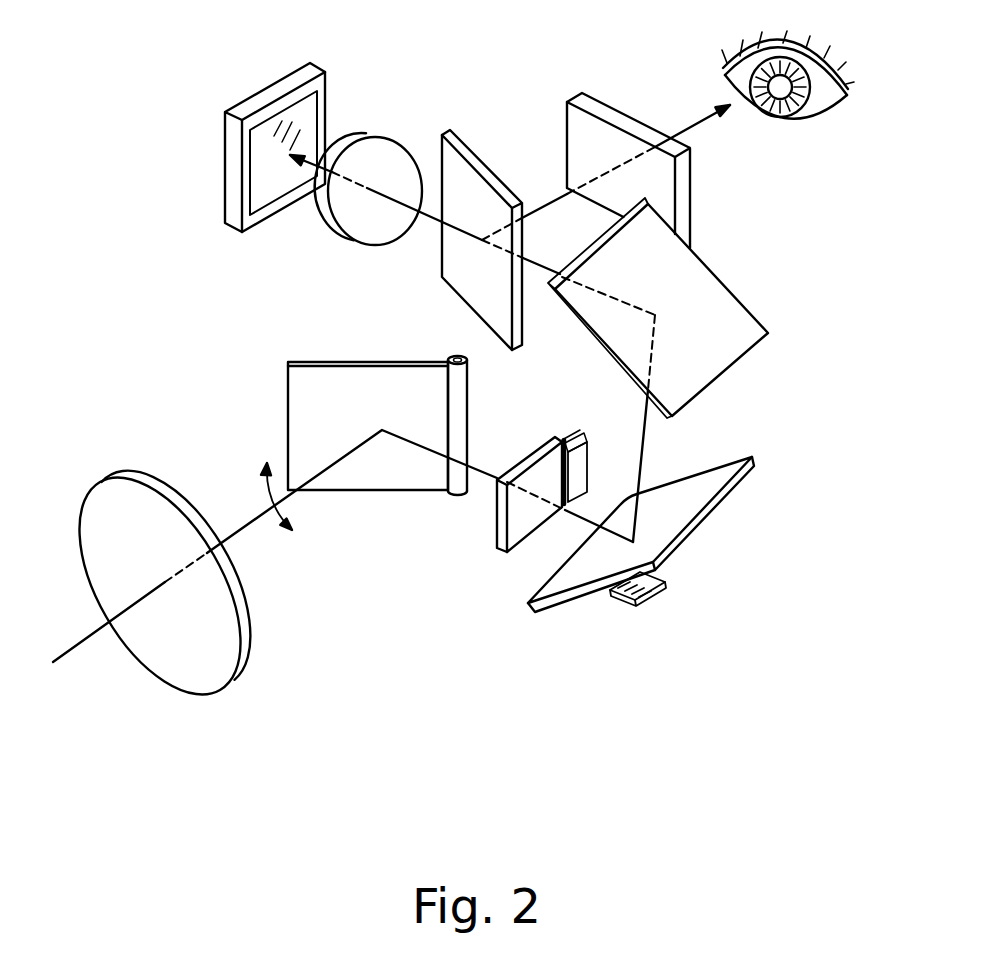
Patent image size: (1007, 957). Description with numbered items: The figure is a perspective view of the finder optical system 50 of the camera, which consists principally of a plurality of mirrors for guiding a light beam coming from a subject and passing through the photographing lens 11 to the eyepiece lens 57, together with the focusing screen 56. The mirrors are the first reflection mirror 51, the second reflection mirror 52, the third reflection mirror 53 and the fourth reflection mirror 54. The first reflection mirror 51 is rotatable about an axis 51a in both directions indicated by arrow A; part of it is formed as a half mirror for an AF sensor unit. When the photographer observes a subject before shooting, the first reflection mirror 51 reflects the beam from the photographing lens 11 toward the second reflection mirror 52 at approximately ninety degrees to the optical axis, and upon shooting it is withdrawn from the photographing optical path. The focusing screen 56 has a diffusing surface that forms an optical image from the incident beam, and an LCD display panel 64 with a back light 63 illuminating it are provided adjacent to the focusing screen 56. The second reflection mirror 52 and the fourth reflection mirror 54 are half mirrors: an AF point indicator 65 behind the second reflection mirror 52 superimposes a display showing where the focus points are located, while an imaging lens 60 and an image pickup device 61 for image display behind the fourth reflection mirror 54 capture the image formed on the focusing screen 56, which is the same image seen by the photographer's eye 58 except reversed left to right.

The photographing lens 11 is at (185, 685).
The finder optical system 50 is at (388, 673).
The first reflection mirror 51 is at (313, 370).
The axis 51a is at (450, 357).
The second reflection mirror 52 is at (738, 490).
The third reflection mirror 53 is at (727, 287).
The fourth reflection mirror 54 is at (470, 145).
The focusing screen 56 is at (502, 553).
The eyepiece lens 57 is at (617, 110).
The photographer's eye 58 is at (825, 60).
The imaging lens 60 is at (367, 133).
The image pickup device for image display 61 is at (260, 88).
The back light 63 is at (568, 437).
The LCD display panel 64 is at (587, 463).
The AF point indicator 65 is at (663, 582).
The arrow A is at (267, 496).